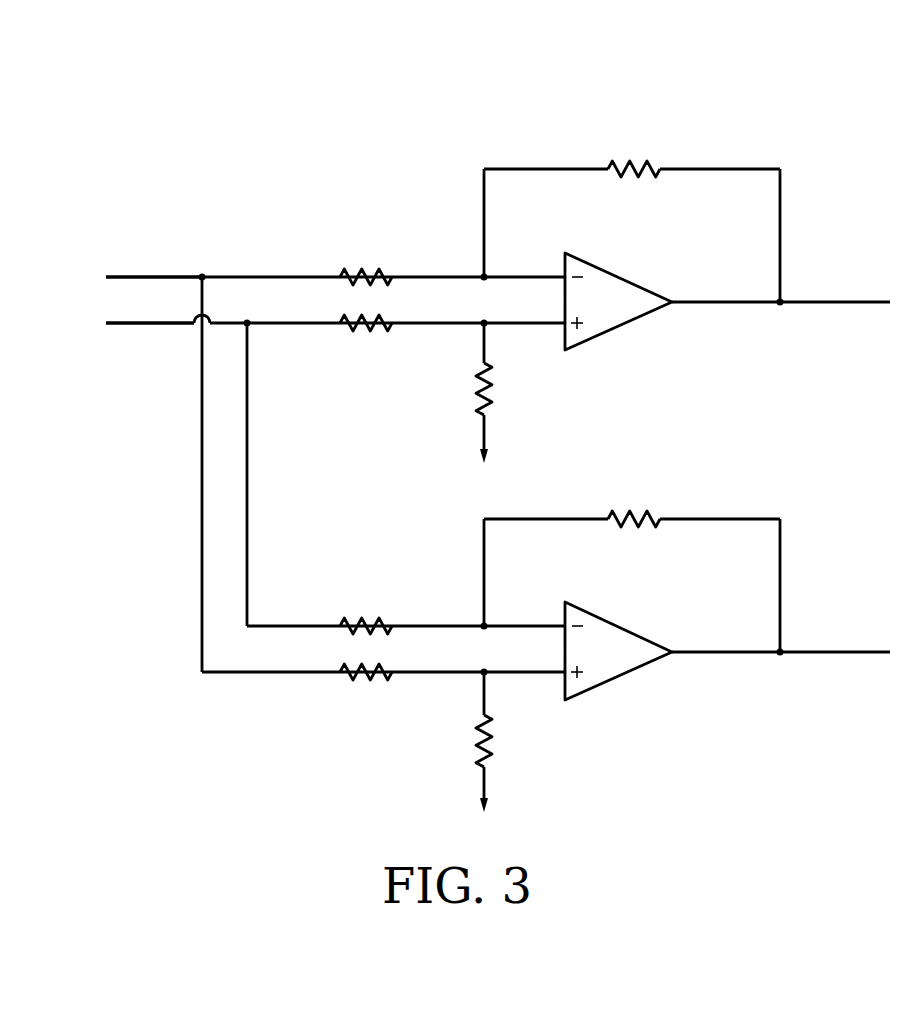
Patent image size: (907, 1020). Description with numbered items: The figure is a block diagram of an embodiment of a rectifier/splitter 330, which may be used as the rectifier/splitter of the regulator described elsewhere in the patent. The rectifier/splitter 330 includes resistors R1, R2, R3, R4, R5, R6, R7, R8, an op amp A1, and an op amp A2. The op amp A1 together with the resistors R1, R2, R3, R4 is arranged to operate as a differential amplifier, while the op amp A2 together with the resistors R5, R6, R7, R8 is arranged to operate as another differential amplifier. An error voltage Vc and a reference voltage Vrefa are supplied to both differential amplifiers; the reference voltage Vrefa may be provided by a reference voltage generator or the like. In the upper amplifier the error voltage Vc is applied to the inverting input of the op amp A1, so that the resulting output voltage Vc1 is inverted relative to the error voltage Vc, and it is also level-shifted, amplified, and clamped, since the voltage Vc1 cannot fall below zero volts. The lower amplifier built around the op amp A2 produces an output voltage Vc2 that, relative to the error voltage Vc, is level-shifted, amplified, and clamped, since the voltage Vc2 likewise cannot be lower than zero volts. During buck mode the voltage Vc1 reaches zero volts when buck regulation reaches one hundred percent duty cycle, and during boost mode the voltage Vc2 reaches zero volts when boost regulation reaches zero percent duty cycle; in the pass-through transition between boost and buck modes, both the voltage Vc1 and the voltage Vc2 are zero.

The rectifier/splitter 330 is at (455, 72).
The resistor R1 is at (366, 262).
The resistor R2 is at (631, 216).
The resistor R3 is at (366, 340).
The resistor R4 is at (503, 392).
The resistor R5 is at (366, 611).
The resistor R6 is at (631, 566).
The resistor R7 is at (366, 688).
The resistor R8 is at (503, 741).
The op amp A1 is at (618, 301).
The op amp A2 is at (618, 651).
The error voltage Vc is at (154, 263).
The reference voltage Vrefa is at (150, 309).
The voltage Vc1 is at (781, 289).
The voltage Vc2 is at (781, 639).